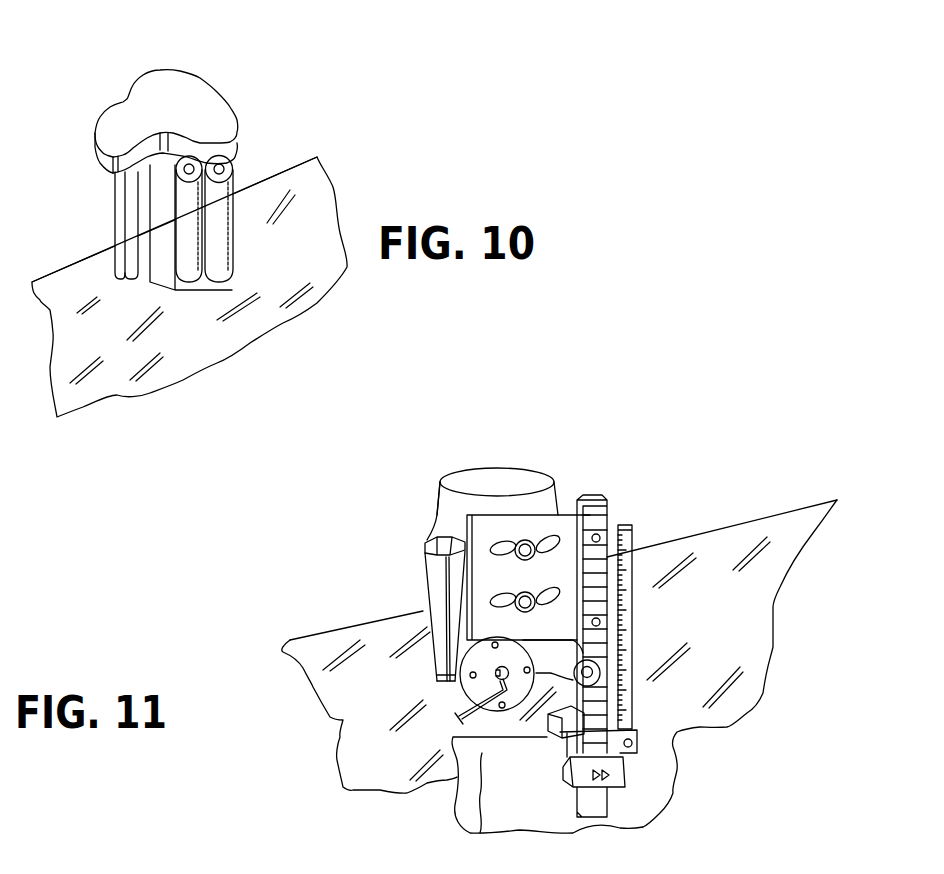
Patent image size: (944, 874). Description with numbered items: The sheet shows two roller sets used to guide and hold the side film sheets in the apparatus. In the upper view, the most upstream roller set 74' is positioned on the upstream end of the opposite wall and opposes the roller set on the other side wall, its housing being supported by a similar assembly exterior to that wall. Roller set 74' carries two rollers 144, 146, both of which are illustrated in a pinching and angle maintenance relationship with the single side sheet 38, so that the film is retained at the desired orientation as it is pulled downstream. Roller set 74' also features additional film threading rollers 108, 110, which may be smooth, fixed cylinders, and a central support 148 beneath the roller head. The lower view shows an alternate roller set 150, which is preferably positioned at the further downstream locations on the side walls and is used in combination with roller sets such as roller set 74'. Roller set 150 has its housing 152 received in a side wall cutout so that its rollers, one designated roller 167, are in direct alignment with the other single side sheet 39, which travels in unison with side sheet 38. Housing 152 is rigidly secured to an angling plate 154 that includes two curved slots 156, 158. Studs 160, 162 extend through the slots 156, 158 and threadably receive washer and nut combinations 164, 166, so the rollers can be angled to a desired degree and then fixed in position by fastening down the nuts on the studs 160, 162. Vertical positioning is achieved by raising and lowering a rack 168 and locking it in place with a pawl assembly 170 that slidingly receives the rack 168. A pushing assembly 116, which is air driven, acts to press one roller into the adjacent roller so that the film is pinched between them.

In FIG. 10, the roller set 74' is at (168, 97).
In FIG. 10, the central block 148 is at (160, 203).
In FIG. 10, the film threading roller 108 is at (117, 236).
In FIG. 10, the film threading roller 110 is at (117, 268).
In FIG. 10, the roller 146 is at (220, 235).
In FIG. 10, the roller 144 is at (193, 273).
In FIG. 10, the single side sheet 38 is at (83, 400).
In FIG. 11, the curved slot 156 is at (500, 538).
In FIG. 11, the roller set 150 is at (507, 473).
In FIG. 11, the housing 152 is at (541, 499).
In FIG. 11, the angling plate 154 is at (565, 519).
In FIG. 11, the stud 160 is at (558, 547).
In FIG. 11, the washer and nut combination 164 is at (473, 534).
In FIG. 11, the washer and nut combination 166 is at (505, 597).
In FIG. 11, the curved slot 158 is at (567, 613).
In FIG. 11, the stud 162 is at (427, 613).
In FIG. 11, the roller 167 is at (447, 654).
In FIG. 11, the pushing assembly 116 is at (455, 698).
In FIG. 11, the single side sheet 39 is at (342, 720).
In FIG. 11, the rack 168 is at (603, 640).
In FIG. 11, the pawl assembly 170 is at (610, 782).